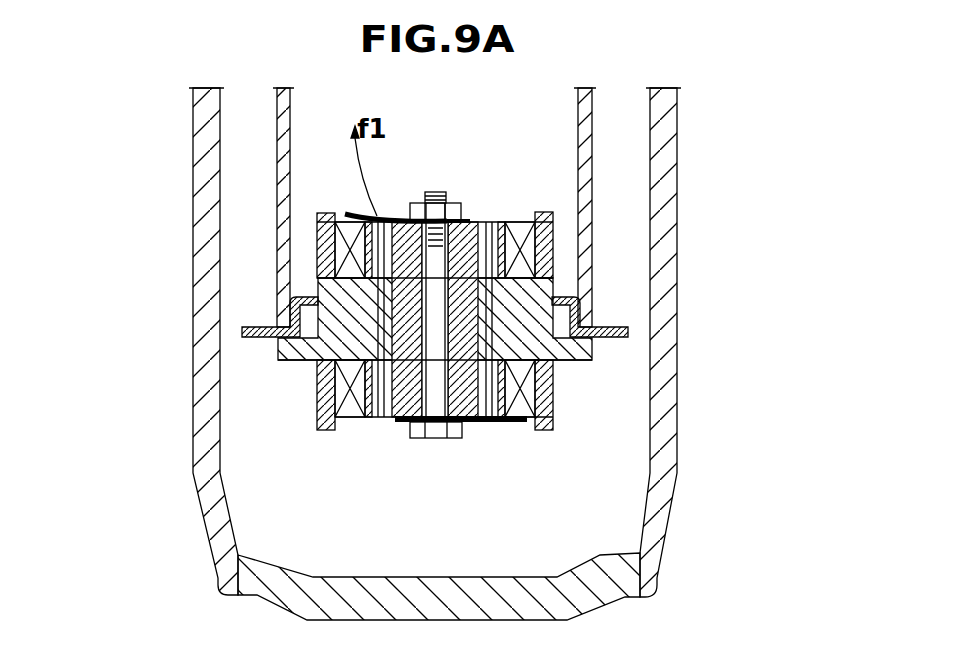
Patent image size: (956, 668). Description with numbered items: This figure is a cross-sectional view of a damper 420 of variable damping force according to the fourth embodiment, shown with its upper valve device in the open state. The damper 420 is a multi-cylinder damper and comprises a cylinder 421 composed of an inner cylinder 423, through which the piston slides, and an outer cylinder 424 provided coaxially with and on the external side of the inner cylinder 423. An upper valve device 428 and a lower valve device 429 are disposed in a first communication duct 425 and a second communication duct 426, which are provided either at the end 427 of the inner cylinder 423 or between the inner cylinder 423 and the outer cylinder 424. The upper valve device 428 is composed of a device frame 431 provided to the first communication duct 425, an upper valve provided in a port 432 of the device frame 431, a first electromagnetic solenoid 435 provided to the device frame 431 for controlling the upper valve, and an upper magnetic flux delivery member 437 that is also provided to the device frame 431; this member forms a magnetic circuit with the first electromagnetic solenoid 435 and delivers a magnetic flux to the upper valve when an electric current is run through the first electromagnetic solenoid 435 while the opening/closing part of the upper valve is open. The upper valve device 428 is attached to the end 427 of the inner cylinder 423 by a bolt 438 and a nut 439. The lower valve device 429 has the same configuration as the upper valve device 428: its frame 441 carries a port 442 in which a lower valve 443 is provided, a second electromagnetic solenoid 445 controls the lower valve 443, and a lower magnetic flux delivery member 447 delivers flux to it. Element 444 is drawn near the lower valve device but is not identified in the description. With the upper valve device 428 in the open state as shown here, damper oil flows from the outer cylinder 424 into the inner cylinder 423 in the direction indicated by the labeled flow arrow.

The damper of variable damping force 420 is at (142, 58).
The cylinder 421 is at (800, 140).
The inner cylinder 423 is at (302, 216).
The outer cylinder 424 is at (678, 229).
The first communication duct 425 is at (308, 363).
The second communication duct 426 is at (347, 213).
The end of the inner cylinder 427 is at (553, 281).
The upper valve device 428 is at (300, 228).
The lower valve device 429 is at (305, 417).
The device frame 431 is at (463, 221).
The port 432 is at (384, 228).
The first electromagnetic solenoid 435 is at (523, 232).
The upper magnetic flux delivery member 437 is at (326, 213).
The bolt 438 is at (437, 440).
The nut 439 is at (452, 206).
The frame 441 is at (400, 428).
The port 442 is at (466, 440).
The lower valve 443 is at (522, 426).
The plate contact portion 444 is at (495, 424).
The second electromagnetic solenoid 445 is at (347, 408).
The lower magnetic flux delivery member 447 is at (550, 430).